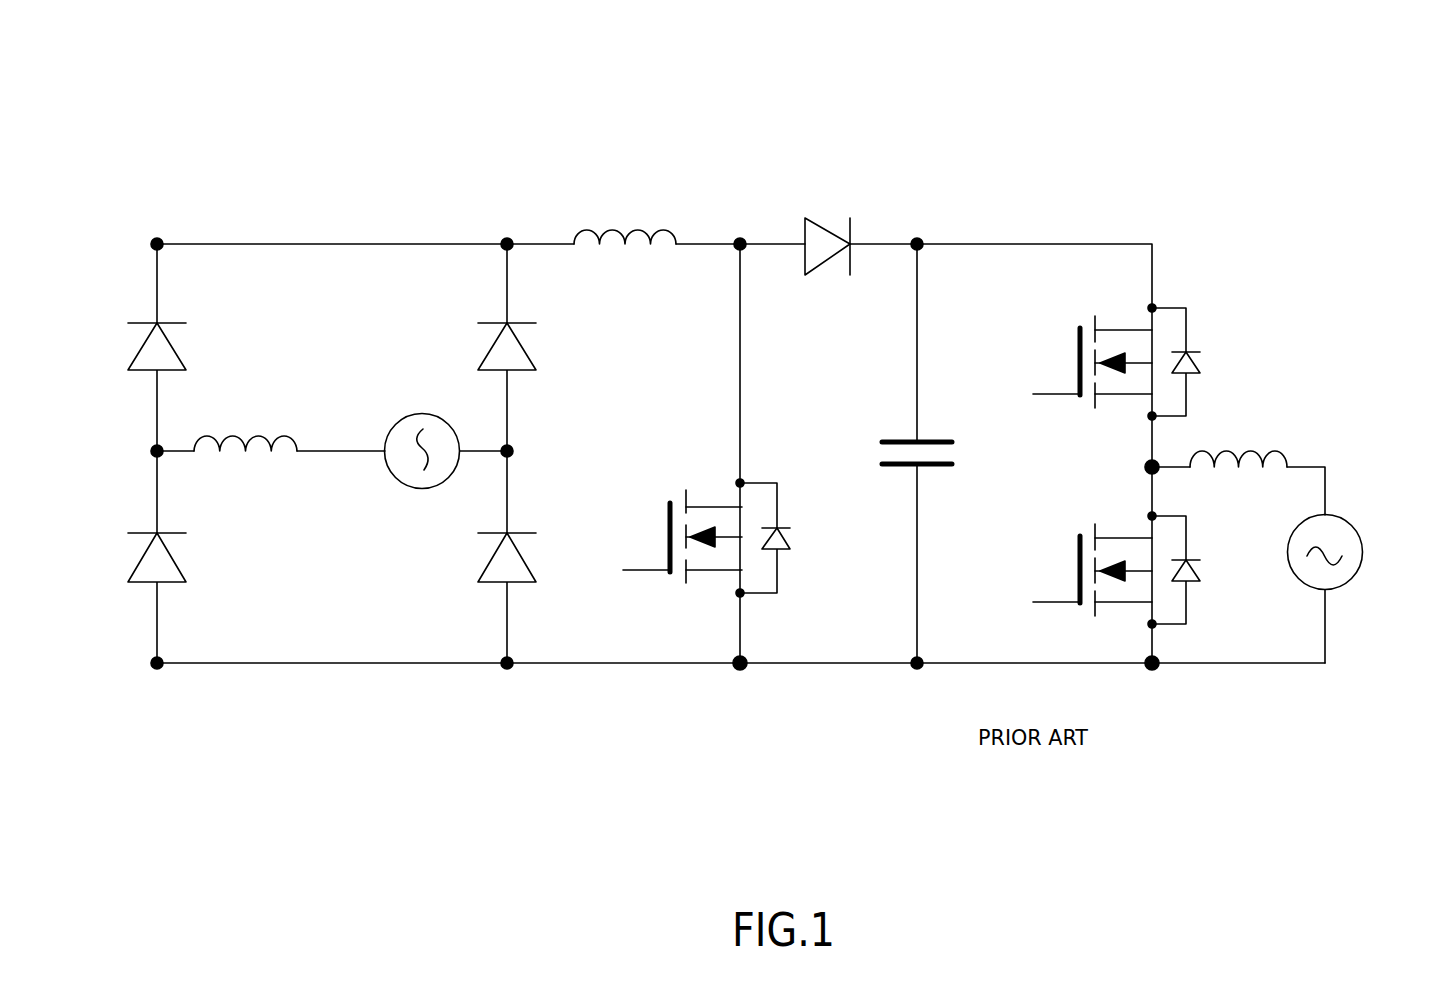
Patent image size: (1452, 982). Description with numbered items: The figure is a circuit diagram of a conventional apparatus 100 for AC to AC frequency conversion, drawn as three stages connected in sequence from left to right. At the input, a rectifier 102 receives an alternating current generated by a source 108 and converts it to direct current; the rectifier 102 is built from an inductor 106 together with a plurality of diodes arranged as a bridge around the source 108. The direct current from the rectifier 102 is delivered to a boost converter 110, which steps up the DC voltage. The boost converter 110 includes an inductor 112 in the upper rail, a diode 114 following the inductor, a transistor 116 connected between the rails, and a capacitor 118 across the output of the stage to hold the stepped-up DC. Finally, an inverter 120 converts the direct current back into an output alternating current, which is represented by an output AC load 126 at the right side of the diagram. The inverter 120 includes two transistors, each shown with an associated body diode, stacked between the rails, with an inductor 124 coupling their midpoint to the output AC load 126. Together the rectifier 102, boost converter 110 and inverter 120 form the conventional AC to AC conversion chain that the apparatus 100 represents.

The apparatus 100 is at (198, 68).
The rectifier 102 is at (508, 224).
The inductor 106 is at (282, 437).
The source 108 is at (415, 415).
The boost converter 110 is at (916, 224).
The inductor 112 is at (600, 248).
The diode 114 is at (812, 276).
The transistor 116 is at (668, 520).
The capacitor 118 is at (882, 441).
The inverter 120 is at (1199, 228).
The output inductor 124 is at (1284, 453).
The output AC load 126 is at (1332, 516).